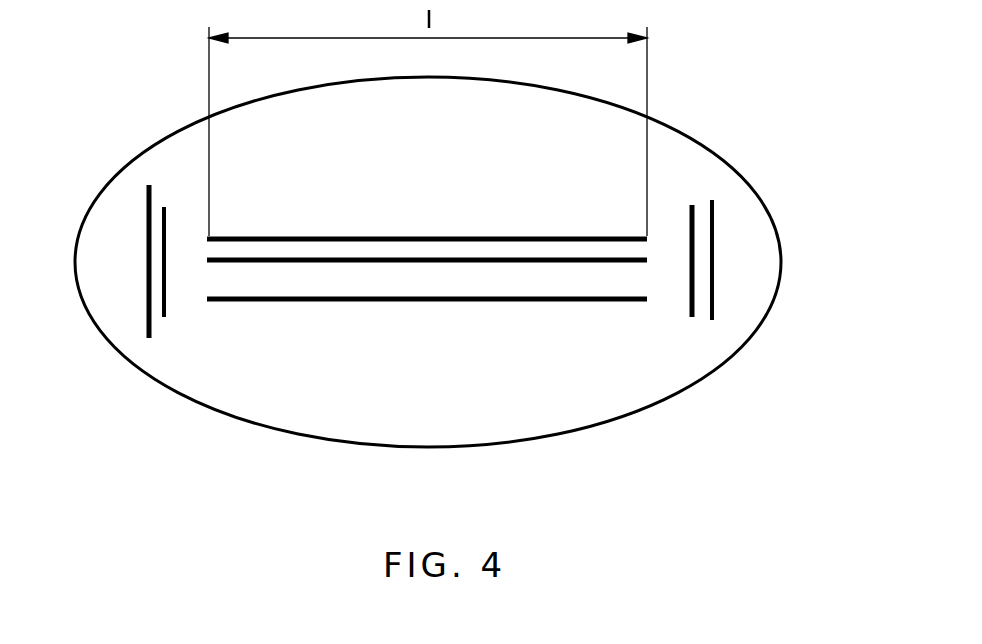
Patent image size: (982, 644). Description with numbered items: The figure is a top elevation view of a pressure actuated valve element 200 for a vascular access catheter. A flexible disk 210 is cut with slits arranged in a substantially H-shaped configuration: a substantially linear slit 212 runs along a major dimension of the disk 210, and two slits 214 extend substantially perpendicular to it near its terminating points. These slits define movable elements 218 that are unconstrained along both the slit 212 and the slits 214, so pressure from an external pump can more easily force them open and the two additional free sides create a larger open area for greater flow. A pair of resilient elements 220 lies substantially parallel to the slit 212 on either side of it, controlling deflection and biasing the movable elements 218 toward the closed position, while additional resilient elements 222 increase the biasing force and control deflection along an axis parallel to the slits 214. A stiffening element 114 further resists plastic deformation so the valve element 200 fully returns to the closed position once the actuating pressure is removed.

The valve element 200 is at (459, 256).
The flexible disk 210 is at (288, 392).
The slit 212 is at (473, 263).
The slits 214 is at (164, 310).
The movable elements 218 is at (387, 248).
The resilient elements 220 is at (243, 238).
The additional resilient elements 222 is at (147, 275).
The stiffening element 114 is at (541, 300).